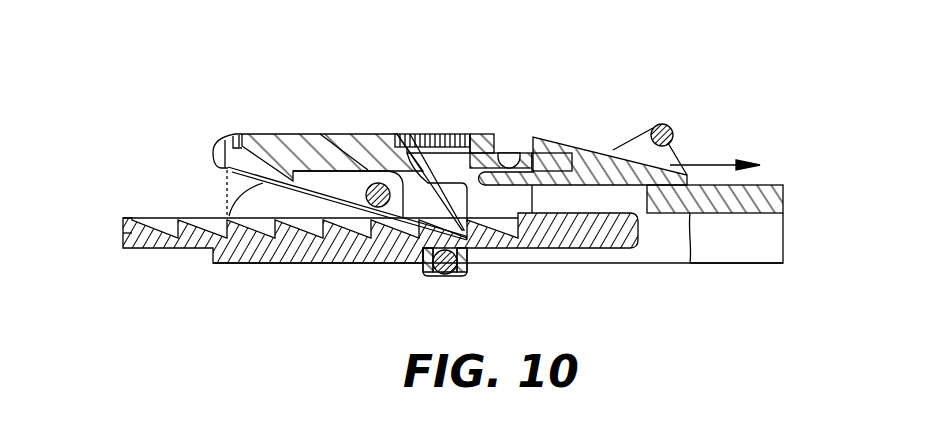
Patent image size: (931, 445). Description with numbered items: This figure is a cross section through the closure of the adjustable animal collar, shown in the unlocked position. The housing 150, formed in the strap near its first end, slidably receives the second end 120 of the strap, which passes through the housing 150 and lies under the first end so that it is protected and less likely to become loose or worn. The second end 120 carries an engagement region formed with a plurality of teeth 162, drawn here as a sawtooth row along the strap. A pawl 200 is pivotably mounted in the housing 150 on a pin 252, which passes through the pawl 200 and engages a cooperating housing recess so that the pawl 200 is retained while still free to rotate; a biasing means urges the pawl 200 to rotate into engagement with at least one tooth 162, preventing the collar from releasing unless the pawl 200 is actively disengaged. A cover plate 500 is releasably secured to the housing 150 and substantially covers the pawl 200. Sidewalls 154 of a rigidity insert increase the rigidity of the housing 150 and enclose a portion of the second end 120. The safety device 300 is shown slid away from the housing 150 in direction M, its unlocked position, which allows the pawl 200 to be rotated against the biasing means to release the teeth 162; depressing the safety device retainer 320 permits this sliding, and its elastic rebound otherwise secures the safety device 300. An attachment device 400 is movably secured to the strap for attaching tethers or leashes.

The second end 120 is at (545, 250).
The pawl 200 is at (270, 133).
The teeth 162 is at (164, 218).
The cover plate 500 is at (407, 134).
The housing 150 is at (473, 133).
The sidewalls 154 is at (508, 152).
The pin 252 is at (372, 196).
The safety device 300 is at (558, 141).
The attachment device 400 is at (675, 124).
The safety device retainer 320 is at (690, 240).
The direction M is at (722, 160).